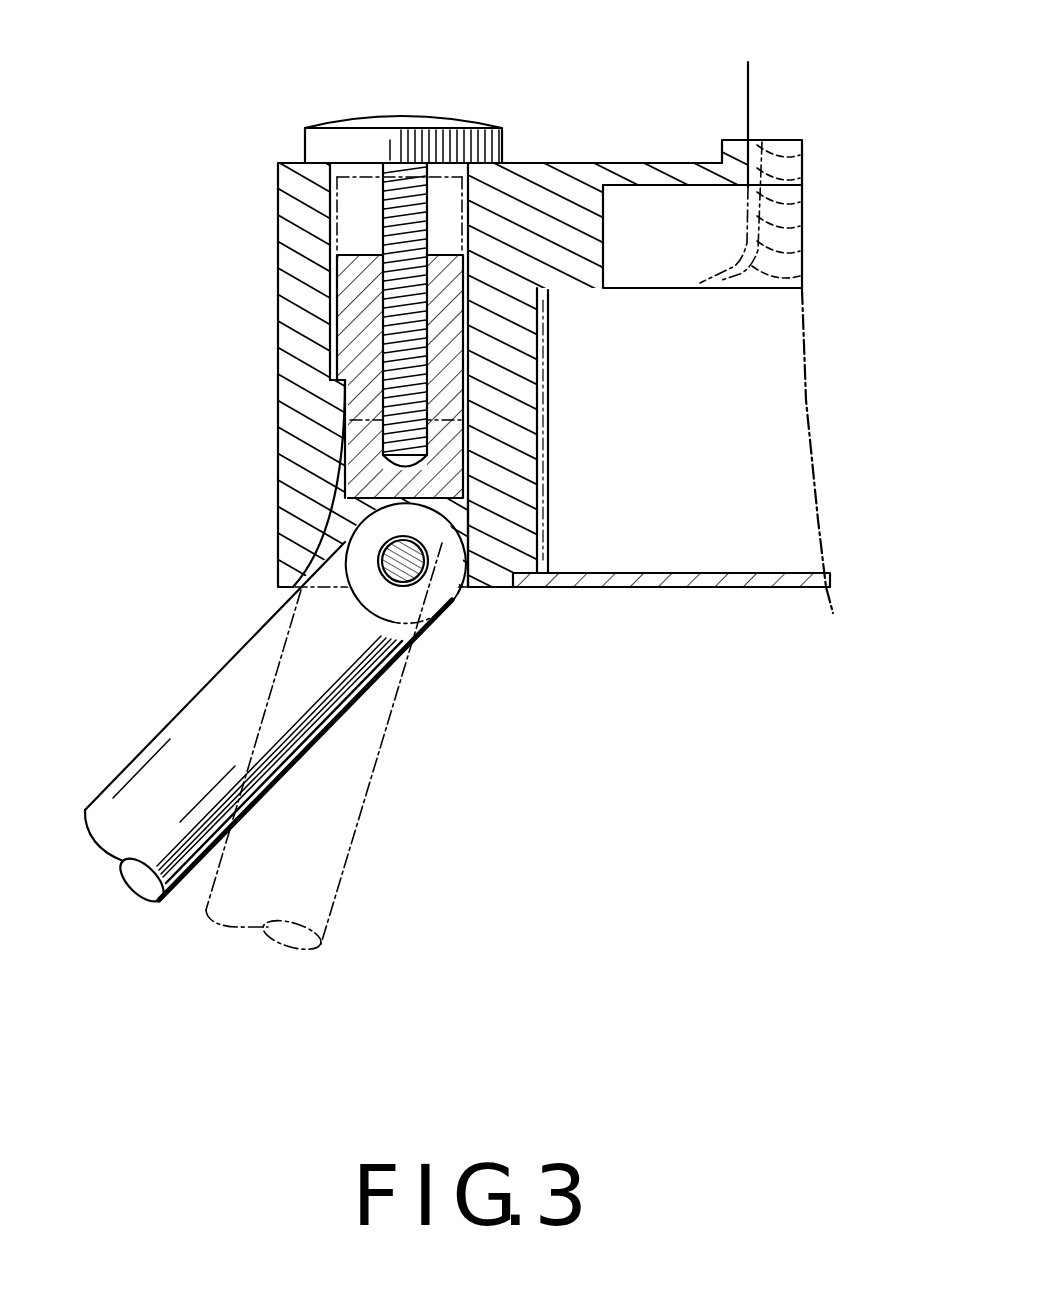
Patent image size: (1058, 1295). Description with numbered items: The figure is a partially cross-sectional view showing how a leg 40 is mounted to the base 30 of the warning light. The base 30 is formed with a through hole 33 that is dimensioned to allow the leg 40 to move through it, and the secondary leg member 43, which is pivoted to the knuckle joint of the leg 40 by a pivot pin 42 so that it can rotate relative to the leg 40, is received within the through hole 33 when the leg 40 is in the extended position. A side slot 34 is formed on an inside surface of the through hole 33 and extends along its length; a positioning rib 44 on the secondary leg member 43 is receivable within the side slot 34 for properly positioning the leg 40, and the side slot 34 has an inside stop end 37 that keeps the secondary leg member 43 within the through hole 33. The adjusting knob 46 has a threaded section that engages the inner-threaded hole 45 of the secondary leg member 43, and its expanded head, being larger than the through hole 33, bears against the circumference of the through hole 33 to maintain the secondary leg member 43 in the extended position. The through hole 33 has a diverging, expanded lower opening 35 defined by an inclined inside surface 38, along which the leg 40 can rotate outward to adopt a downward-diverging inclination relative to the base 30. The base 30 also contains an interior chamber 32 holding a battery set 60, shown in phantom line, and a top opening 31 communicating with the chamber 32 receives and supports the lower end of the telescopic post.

The base 30 is at (577, 183).
The top opening 31 is at (750, 154).
The interior chamber 32 is at (548, 487).
The through hole 33 is at (490, 548).
The side slot 34 is at (330, 205).
The expanded lower opening 35 is at (466, 580).
The inside stop end 37 is at (343, 403).
The inclined inside surface 38 is at (330, 522).
The leg 40 is at (203, 690).
The pivot pin 42 is at (410, 585).
The secondary leg member 43 is at (338, 372).
The positioning rib 44 is at (335, 290).
The inner-threaded hole 45 is at (348, 436).
The adjusting knob 46 is at (435, 117).
The battery set 60 is at (548, 403).